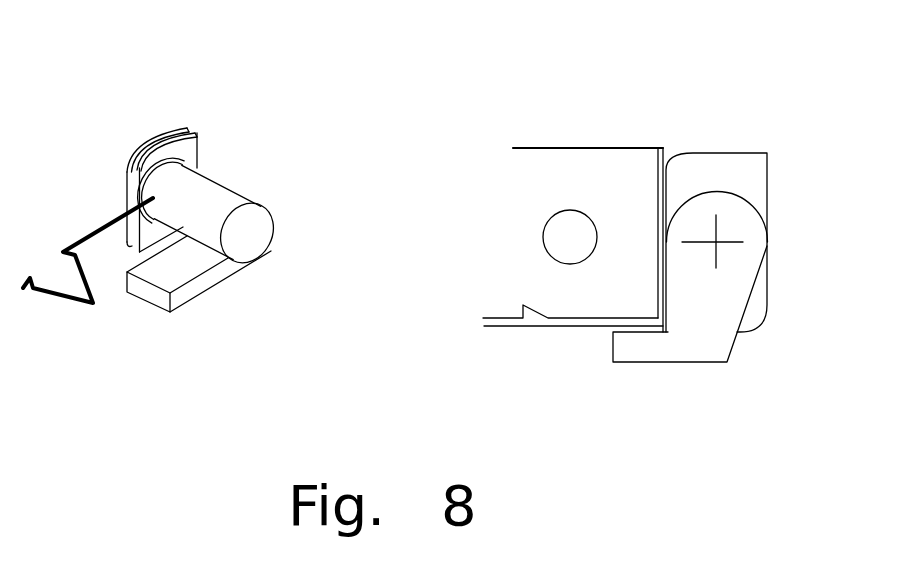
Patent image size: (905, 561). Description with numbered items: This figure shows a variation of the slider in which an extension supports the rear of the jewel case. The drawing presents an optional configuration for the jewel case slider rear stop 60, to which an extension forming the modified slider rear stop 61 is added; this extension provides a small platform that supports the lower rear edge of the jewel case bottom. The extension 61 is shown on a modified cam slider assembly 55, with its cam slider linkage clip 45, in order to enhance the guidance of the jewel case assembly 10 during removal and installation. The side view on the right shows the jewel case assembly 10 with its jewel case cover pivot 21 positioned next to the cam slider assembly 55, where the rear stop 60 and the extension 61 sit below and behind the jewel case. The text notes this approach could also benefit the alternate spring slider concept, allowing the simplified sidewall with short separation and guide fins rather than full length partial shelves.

The jewel case assembly 10 is at (572, 136).
The jewel case cover pivot 21 is at (543, 245).
The cam slider linkage clip 45 is at (62, 307).
The cam slider assembly 55 is at (125, 198).
The jewel case slider rear stop 60 is at (210, 175).
The modified slider rear stop 61 is at (205, 297).